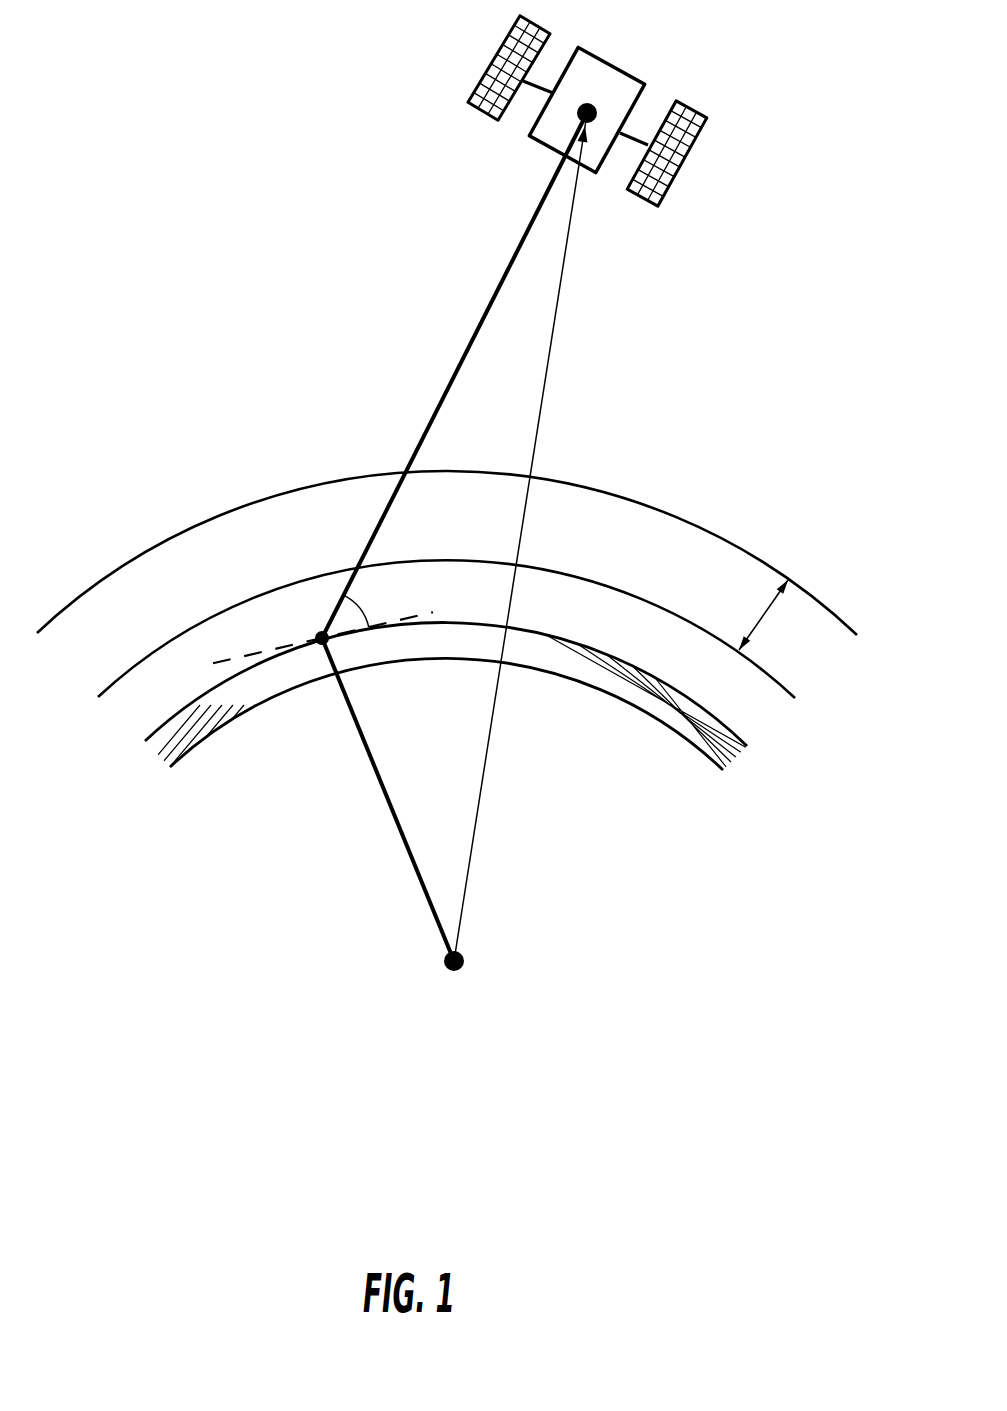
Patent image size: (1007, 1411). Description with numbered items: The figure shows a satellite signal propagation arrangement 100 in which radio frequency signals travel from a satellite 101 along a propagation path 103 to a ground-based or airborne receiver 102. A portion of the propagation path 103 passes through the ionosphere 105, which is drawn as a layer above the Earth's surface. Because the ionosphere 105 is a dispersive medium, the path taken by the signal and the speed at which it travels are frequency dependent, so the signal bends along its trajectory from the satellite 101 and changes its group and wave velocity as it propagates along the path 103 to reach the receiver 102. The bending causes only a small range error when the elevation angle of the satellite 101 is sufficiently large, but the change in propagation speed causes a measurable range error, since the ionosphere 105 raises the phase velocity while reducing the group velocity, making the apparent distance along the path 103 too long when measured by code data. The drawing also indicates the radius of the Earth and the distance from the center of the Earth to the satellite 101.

The satellite positioning system 100 is at (292, 252).
The satellite 101 is at (632, 72).
The receiver 102 is at (322, 645).
The propagation path 103 is at (483, 313).
The ionosphere 105 is at (687, 538).